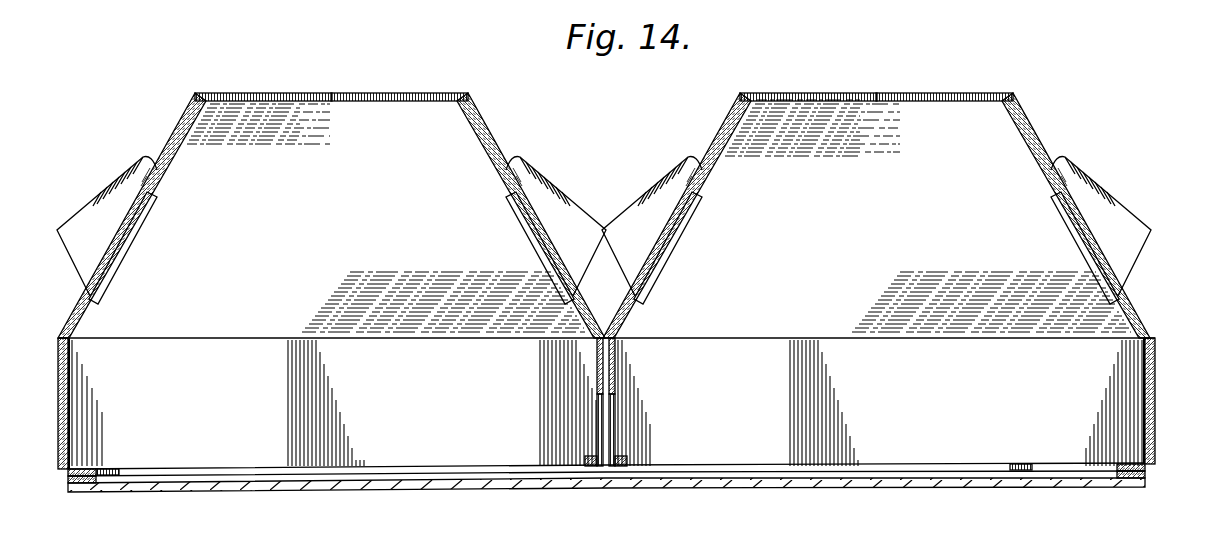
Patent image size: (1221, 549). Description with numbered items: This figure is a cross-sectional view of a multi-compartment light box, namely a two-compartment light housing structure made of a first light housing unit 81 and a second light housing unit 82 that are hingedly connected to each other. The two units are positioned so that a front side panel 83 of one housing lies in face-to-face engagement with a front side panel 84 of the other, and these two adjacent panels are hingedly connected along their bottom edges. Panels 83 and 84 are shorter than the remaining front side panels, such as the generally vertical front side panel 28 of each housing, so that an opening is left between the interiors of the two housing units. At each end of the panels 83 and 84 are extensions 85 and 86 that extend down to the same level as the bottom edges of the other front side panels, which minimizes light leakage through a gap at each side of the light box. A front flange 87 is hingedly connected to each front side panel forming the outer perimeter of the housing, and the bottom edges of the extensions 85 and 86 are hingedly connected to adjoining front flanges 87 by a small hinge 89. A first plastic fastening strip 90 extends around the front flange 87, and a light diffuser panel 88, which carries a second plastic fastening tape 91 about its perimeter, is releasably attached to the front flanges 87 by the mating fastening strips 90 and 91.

The first light housing unit 81 is at (147, 145).
The second light housing unit 82 is at (1058, 132).
The front side panel 83 is at (598, 358).
The front side panel 84 is at (614, 376).
The extension 85 is at (598, 406).
The extension 86 is at (614, 408).
The small hinge 89 is at (594, 457).
The front side panel 28 is at (412, 466).
The light diffuser panel 88 is at (140, 490).
The front flange 87 is at (172, 470).
The first plastic fastening strip 90 is at (70, 476).
The second plastic fastening tape 91 is at (68, 483).